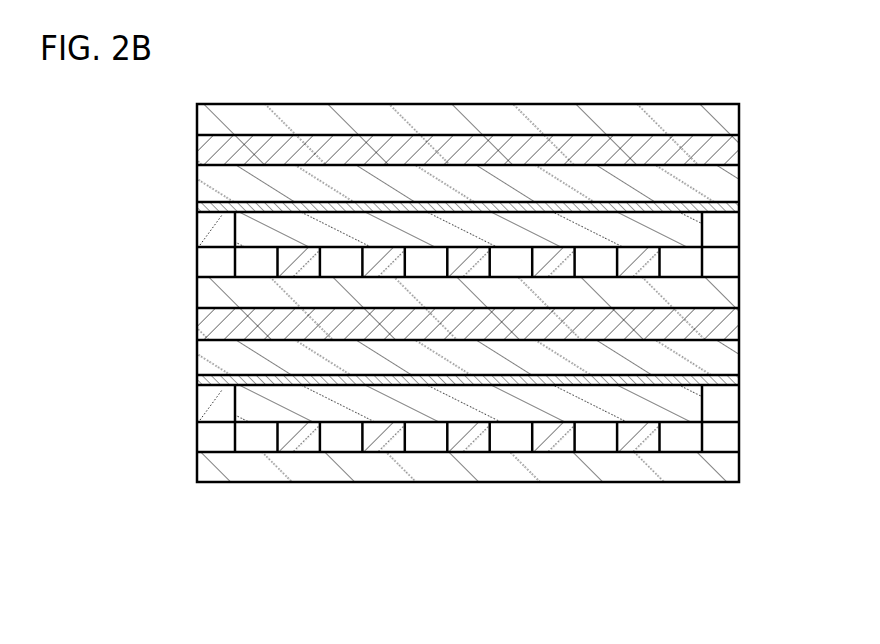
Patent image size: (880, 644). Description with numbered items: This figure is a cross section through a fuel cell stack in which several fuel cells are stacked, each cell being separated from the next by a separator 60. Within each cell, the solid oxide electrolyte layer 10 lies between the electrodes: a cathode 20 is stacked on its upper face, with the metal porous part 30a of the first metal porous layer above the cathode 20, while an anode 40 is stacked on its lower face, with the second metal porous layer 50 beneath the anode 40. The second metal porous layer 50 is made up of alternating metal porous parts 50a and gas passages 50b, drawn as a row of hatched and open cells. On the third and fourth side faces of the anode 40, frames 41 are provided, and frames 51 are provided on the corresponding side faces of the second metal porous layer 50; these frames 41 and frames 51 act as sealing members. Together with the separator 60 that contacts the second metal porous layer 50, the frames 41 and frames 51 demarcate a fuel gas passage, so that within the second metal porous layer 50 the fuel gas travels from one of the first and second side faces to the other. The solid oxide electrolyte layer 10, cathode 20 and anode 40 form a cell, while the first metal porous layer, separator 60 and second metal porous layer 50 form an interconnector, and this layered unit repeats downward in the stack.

The solid oxide electrolyte layer 10 is at (215, 209).
The cathode 20 is at (722, 185).
The metal porous part 30a is at (722, 152).
The anode 40 is at (705, 227).
The frame 41 is at (217, 224).
The second metal porous layer 50 is at (469, 426).
The metal porous part 50a is at (458, 442).
The gas passage 50b is at (515, 442).
The frame 51 is at (210, 265).
The separator 60 is at (720, 117).